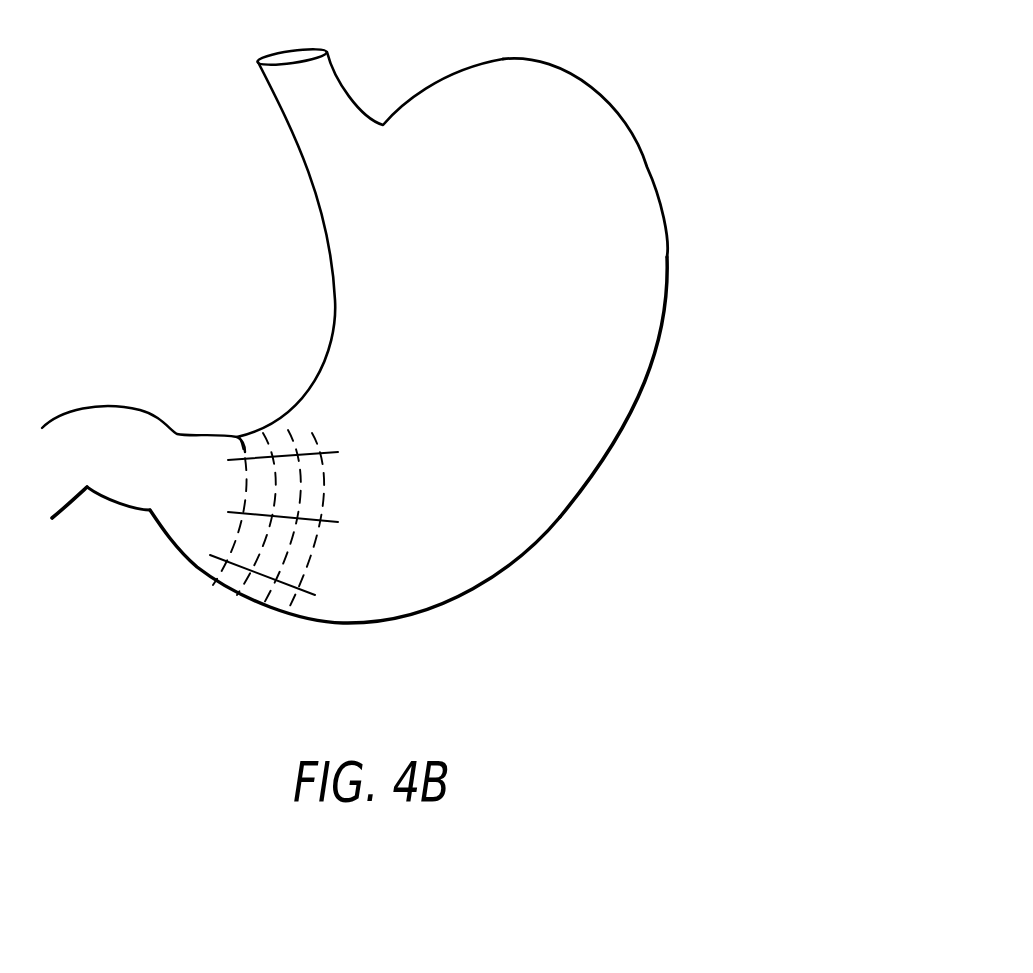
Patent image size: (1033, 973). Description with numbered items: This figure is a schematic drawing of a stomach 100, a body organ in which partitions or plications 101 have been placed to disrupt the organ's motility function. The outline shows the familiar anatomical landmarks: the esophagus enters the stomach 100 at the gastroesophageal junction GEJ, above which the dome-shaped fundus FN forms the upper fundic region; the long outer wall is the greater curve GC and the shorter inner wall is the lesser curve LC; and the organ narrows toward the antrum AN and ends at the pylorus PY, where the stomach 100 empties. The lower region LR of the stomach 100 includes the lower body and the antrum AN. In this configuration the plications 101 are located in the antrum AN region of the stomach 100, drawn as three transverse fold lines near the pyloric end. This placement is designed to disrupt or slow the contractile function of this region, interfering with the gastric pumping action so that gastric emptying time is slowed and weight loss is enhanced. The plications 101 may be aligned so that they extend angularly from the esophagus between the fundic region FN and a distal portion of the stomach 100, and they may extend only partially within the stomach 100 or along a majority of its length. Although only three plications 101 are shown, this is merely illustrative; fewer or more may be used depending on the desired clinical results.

The stomach 100 is at (404, 345).
The plications 101 is at (310, 450).
The gastroesophageal junction GEJ is at (383, 110).
The fundus FN is at (588, 88).
The lower region LR is at (662, 337).
The greater curve GC is at (612, 443).
The lesser curve LC is at (335, 281).
The pylorus PY is at (155, 417).
The antrum AN is at (160, 530).